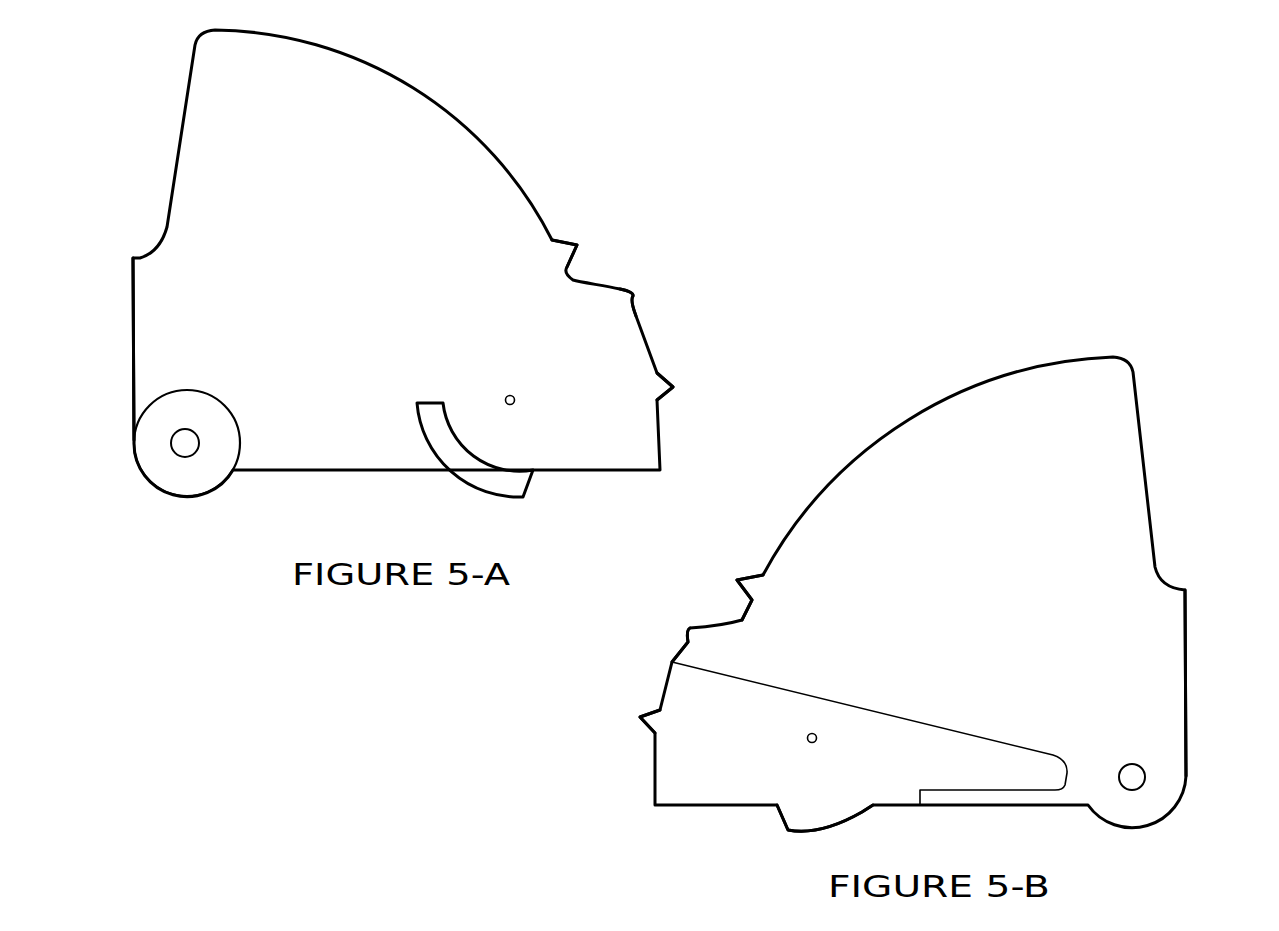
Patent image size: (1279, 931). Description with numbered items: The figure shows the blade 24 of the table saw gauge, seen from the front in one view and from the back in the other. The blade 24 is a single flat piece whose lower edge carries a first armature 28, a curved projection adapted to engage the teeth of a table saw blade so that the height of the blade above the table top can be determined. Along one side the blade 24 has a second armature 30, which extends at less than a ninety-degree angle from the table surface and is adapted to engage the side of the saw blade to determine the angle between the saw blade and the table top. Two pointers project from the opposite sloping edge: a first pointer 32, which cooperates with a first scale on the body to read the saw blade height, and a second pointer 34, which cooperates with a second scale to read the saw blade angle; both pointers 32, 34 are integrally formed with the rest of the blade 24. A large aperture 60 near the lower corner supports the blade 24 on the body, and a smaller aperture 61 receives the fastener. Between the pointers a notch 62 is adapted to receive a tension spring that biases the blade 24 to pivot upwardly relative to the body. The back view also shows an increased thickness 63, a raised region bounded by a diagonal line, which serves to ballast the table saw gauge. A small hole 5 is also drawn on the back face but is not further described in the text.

In FIG. 5A, the blade 24 is at (158, 221).
In FIG. 5B, the blade 24 is at (1166, 539).
In FIG. 5A, the second armature 30 is at (126, 347).
In FIG. 5B, the second armature 30 is at (1195, 714).
In FIG. 5A, the second pointer 34 is at (573, 247).
In FIG. 5B, the second pointer 34 is at (737, 580).
In FIG. 5A, the notch 62 is at (630, 314).
In FIG. 5B, the notch 62 is at (683, 638).
In FIG. 5A, the aperture 61 is at (514, 396).
In FIG. 5A, the first pointer 32 is at (668, 380).
In FIG. 5B, the first pointer 32 is at (640, 715).
In FIG. 5A, the aperture 60 is at (177, 435).
In FIG. 5B, the aperture 60 is at (1125, 785).
In FIG. 5A, the first armature 28 is at (460, 487).
In FIG. 5B, the first armature 28 is at (780, 818).
In FIG. 5B, the increased thickness 63 is at (845, 688).
In FIG. 5B, the aperture 5 is at (816, 735).